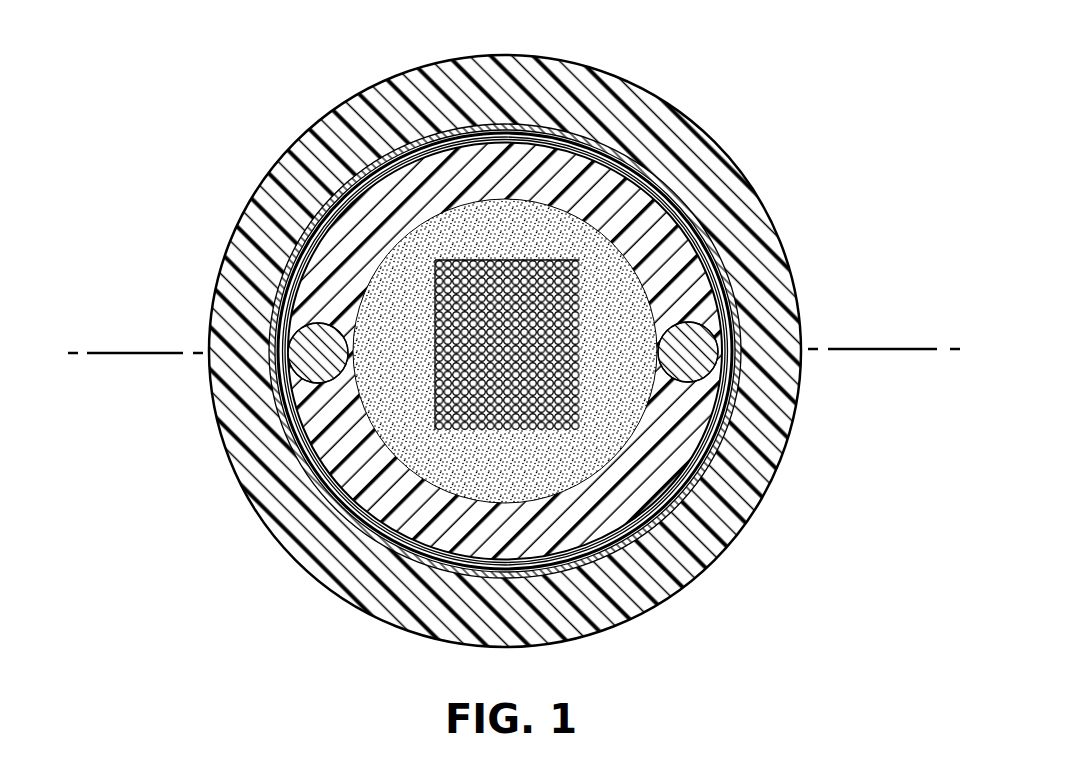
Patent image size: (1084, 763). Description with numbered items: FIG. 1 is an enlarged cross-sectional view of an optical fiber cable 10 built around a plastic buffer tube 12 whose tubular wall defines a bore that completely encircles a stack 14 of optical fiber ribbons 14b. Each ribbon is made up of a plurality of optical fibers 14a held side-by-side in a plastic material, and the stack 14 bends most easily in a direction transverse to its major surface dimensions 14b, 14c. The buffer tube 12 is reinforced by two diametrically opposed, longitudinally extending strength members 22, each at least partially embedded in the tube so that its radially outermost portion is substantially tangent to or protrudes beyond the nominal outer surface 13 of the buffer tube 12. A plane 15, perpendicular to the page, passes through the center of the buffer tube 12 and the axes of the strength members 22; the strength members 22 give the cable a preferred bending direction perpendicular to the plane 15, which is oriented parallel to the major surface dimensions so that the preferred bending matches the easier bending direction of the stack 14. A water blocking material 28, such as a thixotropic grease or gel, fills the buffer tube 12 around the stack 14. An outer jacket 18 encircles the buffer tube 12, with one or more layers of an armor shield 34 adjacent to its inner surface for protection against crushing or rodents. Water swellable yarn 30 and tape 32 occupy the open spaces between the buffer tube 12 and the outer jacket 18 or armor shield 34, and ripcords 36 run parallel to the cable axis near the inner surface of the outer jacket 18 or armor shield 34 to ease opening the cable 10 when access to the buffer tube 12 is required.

The optical fiber cable 10 is at (718, 143).
The buffer tube 12 is at (397, 213).
The outer surface of the buffer tube 13 is at (340, 220).
The stack 14 is at (585, 281).
The optical fiber 14a is at (492, 261).
The optical fiber ribbon 14b is at (437, 336).
The major surface dimension 14c is at (580, 455).
The plane 15 is at (123, 353).
The outer jacket 18 is at (633, 613).
The strength members 22 is at (330, 357).
The water blocking material 28 is at (537, 487).
The water swellable yarn 30 is at (723, 413).
The water swellable tape 32 is at (607, 163).
The armor shield 34 is at (300, 237).
The ripcord 36 is at (462, 137).